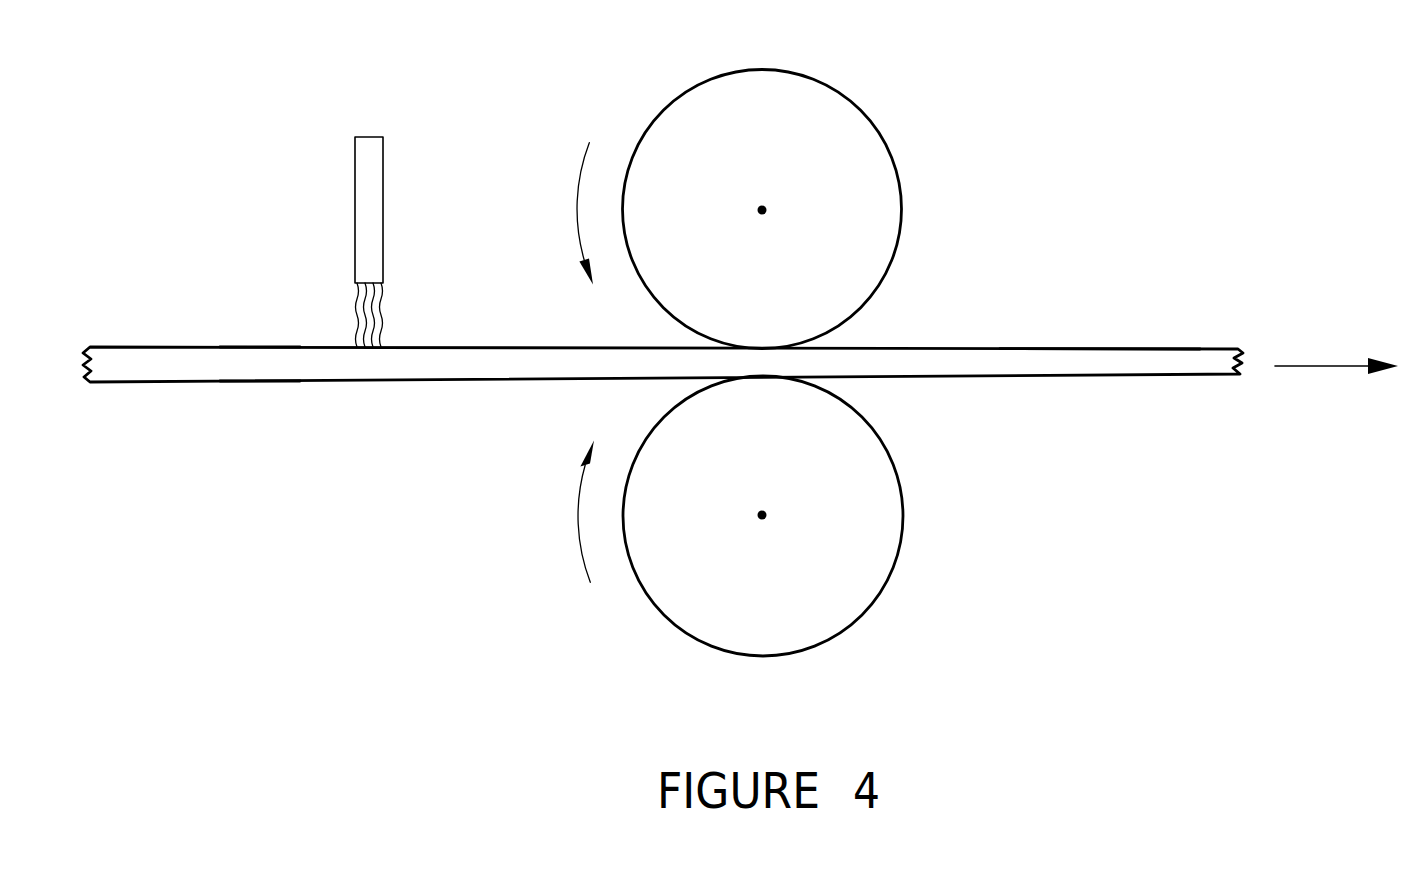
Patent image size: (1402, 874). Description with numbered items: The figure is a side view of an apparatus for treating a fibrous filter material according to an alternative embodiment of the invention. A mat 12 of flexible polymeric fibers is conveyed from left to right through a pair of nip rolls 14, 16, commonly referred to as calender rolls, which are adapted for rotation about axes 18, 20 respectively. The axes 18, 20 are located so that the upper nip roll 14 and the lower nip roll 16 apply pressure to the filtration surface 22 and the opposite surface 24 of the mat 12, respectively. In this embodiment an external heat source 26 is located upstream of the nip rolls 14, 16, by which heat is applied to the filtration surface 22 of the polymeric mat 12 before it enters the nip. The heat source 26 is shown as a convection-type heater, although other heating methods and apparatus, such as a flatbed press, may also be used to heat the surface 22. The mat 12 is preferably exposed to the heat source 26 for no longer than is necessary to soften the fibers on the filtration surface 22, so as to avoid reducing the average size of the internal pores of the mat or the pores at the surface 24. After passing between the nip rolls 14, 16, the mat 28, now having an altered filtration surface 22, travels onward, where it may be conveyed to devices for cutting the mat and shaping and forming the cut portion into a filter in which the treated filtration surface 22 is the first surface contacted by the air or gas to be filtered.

The mat 12 is at (133, 362).
The upper nip roll 14 is at (822, 62).
The lower nip roll 16 is at (906, 444).
The axis of upper nip roll 18 is at (777, 186).
The axis of lower nip roll 20 is at (779, 489).
The filtration surface 22 is at (246, 328).
The surface 24 is at (243, 405).
The heat source 26 is at (363, 167).
The mat having an altered filtration surface 28 is at (1077, 362).